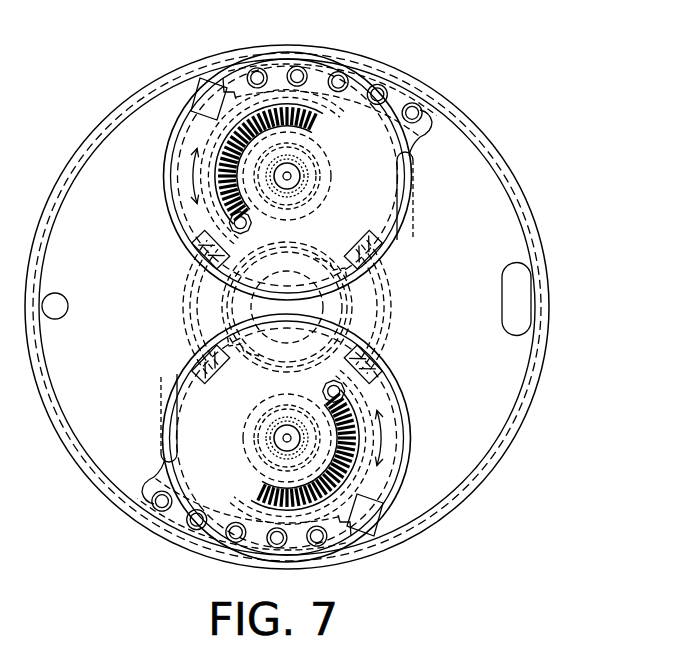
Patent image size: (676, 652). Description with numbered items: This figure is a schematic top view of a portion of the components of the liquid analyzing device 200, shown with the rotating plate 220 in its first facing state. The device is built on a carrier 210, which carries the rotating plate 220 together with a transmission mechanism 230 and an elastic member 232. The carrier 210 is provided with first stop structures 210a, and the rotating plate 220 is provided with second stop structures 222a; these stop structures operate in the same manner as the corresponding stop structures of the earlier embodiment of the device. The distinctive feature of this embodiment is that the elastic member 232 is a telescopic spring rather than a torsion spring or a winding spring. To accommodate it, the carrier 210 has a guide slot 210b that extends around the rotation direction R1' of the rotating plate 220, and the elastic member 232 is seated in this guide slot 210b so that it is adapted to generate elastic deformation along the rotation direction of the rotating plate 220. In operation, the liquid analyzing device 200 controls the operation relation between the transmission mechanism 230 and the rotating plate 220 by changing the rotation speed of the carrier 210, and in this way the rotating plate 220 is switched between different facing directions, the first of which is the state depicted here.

The liquid analyzing device 200 is at (580, 72).
The carrier 210 is at (490, 245).
The first stop structures 210a is at (272, 165).
The guide slot 210b is at (220, 142).
The rotating plate 220 is at (290, 54).
The second stop structures 222a is at (192, 267).
The transmission mechanism 230 is at (325, 127).
The elastic member 232 is at (370, 63).
The rotation direction R1' is at (269, 268).